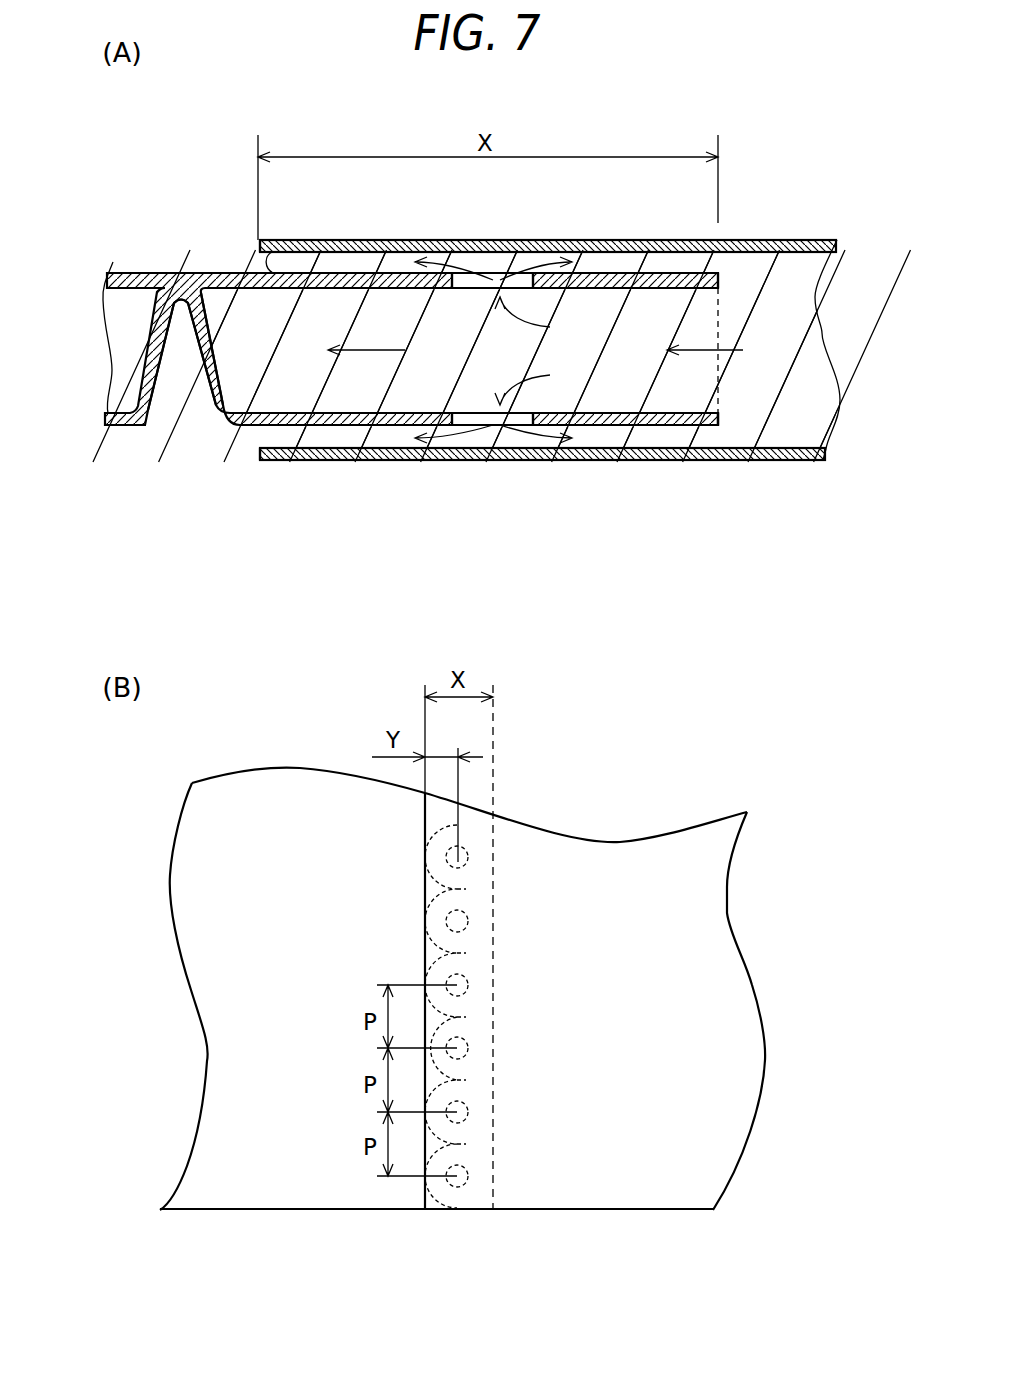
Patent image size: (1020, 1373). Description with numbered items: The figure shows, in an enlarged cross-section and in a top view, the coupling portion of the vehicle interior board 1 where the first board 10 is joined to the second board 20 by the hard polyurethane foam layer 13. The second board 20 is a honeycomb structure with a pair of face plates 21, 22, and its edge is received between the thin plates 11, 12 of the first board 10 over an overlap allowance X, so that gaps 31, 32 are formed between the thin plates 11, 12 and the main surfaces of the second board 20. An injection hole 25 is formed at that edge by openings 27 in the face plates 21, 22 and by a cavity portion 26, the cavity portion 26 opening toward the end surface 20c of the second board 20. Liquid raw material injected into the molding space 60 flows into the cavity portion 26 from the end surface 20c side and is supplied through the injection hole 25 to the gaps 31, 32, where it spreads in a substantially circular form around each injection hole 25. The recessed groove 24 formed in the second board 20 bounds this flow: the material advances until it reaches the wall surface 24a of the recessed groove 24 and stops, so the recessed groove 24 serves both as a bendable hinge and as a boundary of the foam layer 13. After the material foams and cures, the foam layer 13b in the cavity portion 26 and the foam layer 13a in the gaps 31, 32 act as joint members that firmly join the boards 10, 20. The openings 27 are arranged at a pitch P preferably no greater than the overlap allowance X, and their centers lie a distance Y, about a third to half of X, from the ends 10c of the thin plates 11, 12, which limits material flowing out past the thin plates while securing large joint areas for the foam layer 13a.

The vehicle interior board 1 is at (622, 735).
The first board 10 is at (792, 139).
The ends of the thin plates 10c is at (262, 240).
The thin plate 11 is at (790, 240).
The thin plate 12 is at (753, 462).
The hard polyurethane foam layer 13 is at (795, 462).
The hard polyurethane foam layer 13a is at (346, 241).
The hard polyurethane foam layer 13b is at (390, 363).
The second board 20 is at (118, 150).
The end surface 20c is at (718, 287).
The face plate 21 is at (152, 273).
The face plate 22 is at (111, 427).
The recessed groove 24 is at (183, 370).
The wall surface 24a is at (233, 320).
The injection hole 25 is at (468, 985).
The cavity portion 26 is at (643, 373).
The opening 27 is at (500, 240).
The gap 31 is at (640, 240).
The gap 32 is at (592, 460).
The molding space 60 is at (797, 447).